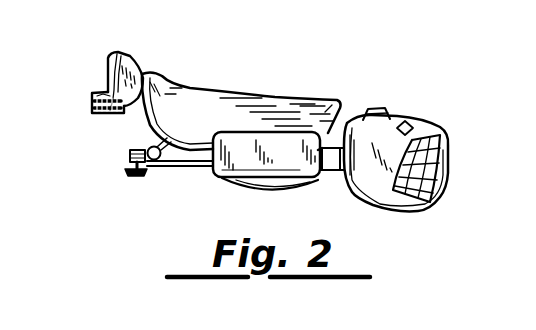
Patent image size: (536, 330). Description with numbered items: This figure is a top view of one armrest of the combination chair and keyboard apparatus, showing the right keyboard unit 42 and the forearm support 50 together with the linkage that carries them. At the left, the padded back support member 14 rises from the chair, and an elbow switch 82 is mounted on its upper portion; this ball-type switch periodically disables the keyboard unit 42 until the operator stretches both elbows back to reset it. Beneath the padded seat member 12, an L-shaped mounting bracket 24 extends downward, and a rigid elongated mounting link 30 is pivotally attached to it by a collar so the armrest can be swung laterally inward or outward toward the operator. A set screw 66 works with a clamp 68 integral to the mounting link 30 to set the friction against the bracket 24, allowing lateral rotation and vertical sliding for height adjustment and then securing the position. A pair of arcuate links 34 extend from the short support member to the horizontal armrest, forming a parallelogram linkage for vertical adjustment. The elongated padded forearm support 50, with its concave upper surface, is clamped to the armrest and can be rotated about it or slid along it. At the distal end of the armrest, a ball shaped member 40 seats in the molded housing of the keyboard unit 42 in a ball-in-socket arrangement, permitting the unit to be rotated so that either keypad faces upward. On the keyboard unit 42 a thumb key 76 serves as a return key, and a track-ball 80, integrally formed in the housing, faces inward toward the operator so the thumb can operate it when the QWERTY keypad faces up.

The padded seat member 12 is at (200, 121).
The padded back support member 14 is at (108, 67).
The L-shaped mounting bracket 24 is at (143, 147).
The mounting link 30 is at (175, 172).
The arcuate link 34 is at (289, 198).
The ball shaped member 40 is at (339, 186).
The keyboard unit 42 is at (443, 123).
The padded forearm support 50 is at (217, 177).
The set screw 66 is at (133, 177).
The clamp 68 is at (130, 153).
The thumb key 76 is at (405, 122).
The track-ball 80 is at (375, 109).
The elbow switch 82 is at (100, 116).